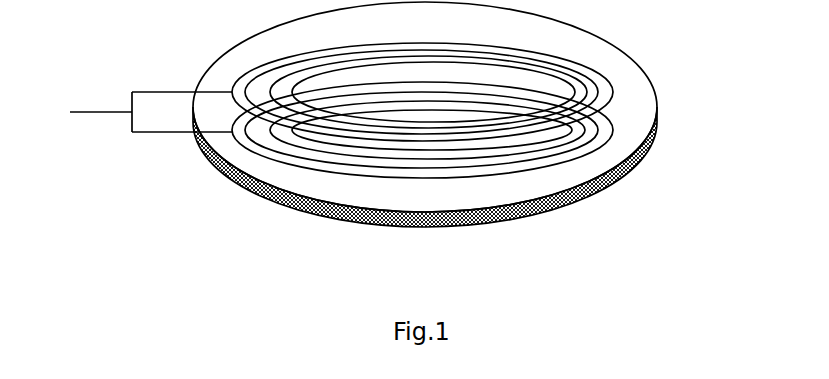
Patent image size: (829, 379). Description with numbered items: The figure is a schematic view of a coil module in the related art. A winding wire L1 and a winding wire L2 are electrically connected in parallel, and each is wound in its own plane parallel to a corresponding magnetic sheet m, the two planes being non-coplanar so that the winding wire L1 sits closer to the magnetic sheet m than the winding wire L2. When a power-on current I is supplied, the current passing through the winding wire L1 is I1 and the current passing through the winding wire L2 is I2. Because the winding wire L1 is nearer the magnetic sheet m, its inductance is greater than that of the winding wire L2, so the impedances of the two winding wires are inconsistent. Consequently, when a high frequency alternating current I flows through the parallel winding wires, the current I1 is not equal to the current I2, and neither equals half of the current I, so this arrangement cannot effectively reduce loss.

The magnetic sheet m is at (633, 162).
The winding wire L1 is at (613, 130).
The winding wire L2 is at (613, 92).
The power-on current I is at (109, 100).
The current passing through the winding wire L1 I1 is at (170, 136).
The current passing through the winding wire L2 I2 is at (174, 82).